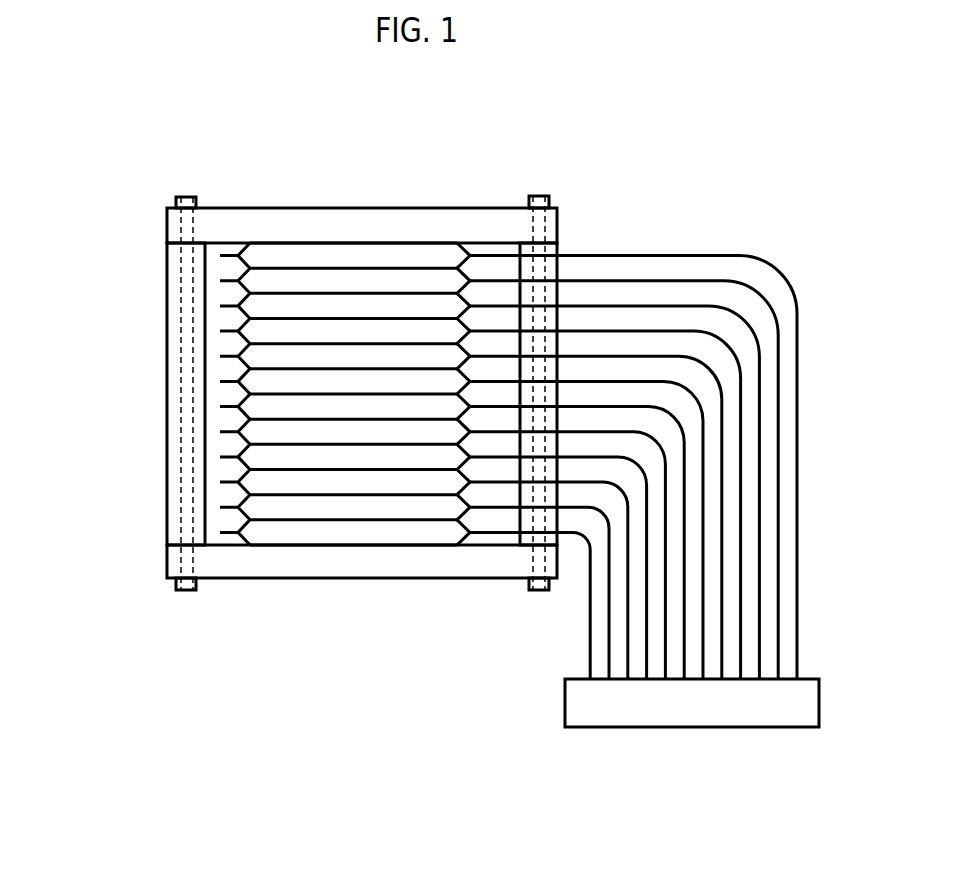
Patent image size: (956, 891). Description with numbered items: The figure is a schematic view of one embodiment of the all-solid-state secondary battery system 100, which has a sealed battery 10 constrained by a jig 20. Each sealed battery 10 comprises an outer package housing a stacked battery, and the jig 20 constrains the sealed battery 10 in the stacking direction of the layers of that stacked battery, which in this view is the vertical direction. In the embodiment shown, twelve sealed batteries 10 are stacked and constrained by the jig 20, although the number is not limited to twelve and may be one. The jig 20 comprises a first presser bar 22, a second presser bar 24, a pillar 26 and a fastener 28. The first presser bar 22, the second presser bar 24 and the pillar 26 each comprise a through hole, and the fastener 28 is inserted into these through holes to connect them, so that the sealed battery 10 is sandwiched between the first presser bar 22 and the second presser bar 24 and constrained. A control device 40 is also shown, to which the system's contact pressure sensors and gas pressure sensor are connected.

The all-solid-state secondary battery system 100 is at (527, 157).
The sealed battery 10 is at (376, 533).
The jig 20 is at (103, 155).
The first presser bar 22 is at (182, 232).
The second presser bar 24 is at (182, 566).
The pillar 26 is at (180, 368).
The fastener 28 is at (178, 200).
The control device 40 is at (667, 705).